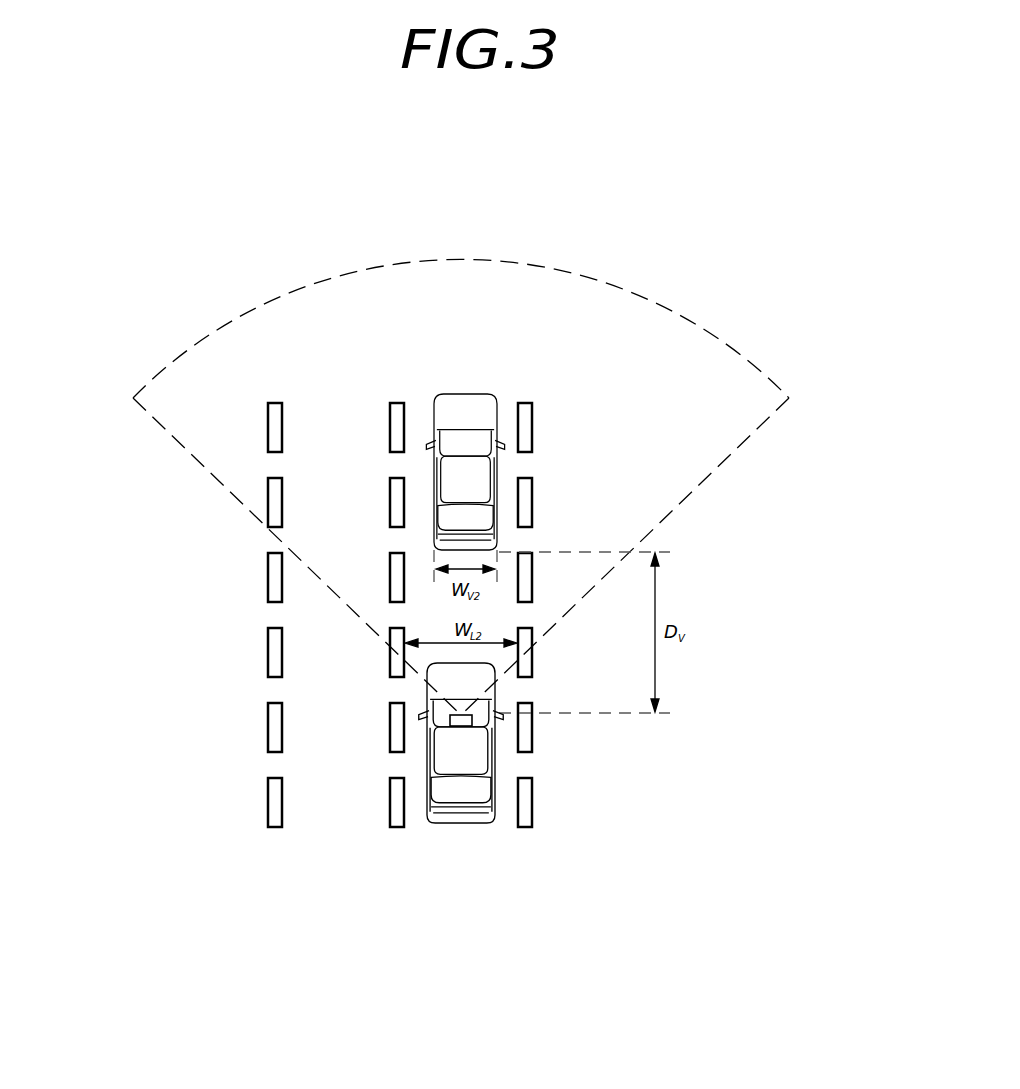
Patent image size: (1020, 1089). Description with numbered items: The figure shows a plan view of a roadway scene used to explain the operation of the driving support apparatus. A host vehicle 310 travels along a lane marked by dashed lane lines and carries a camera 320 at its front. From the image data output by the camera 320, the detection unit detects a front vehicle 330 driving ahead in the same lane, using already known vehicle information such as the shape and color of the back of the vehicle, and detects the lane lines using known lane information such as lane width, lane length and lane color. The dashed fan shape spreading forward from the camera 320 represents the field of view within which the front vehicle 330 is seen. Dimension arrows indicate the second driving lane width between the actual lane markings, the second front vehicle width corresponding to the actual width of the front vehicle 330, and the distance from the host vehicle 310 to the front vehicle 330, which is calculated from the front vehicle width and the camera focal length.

The host vehicle 310 is at (457, 824).
The camera 320 is at (473, 723).
The front vehicle 330 is at (478, 393).